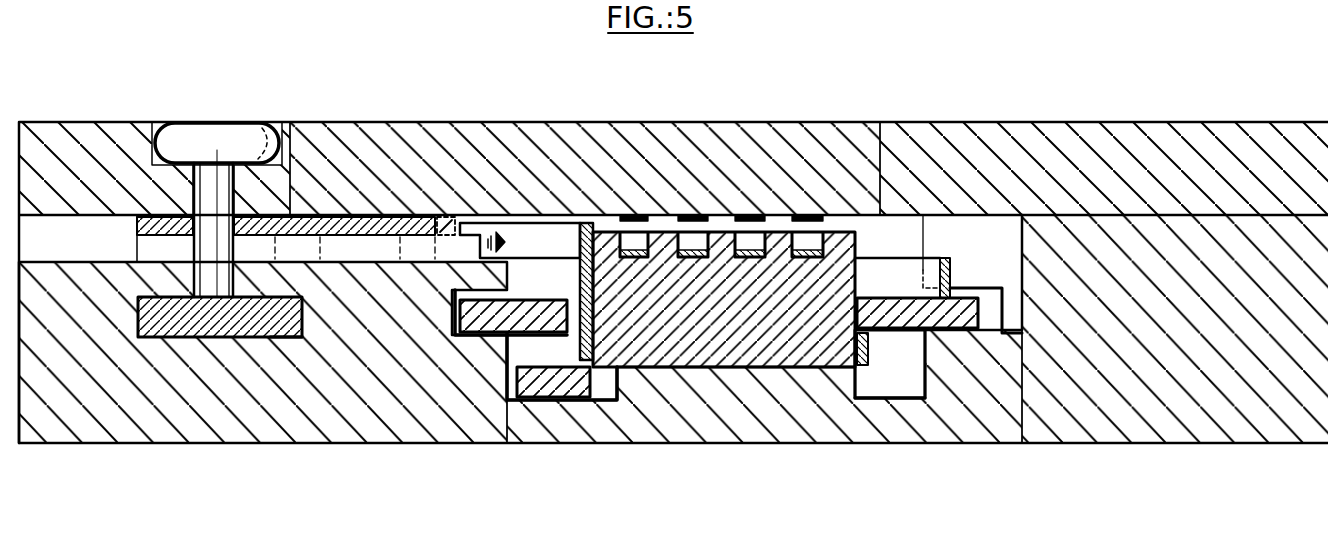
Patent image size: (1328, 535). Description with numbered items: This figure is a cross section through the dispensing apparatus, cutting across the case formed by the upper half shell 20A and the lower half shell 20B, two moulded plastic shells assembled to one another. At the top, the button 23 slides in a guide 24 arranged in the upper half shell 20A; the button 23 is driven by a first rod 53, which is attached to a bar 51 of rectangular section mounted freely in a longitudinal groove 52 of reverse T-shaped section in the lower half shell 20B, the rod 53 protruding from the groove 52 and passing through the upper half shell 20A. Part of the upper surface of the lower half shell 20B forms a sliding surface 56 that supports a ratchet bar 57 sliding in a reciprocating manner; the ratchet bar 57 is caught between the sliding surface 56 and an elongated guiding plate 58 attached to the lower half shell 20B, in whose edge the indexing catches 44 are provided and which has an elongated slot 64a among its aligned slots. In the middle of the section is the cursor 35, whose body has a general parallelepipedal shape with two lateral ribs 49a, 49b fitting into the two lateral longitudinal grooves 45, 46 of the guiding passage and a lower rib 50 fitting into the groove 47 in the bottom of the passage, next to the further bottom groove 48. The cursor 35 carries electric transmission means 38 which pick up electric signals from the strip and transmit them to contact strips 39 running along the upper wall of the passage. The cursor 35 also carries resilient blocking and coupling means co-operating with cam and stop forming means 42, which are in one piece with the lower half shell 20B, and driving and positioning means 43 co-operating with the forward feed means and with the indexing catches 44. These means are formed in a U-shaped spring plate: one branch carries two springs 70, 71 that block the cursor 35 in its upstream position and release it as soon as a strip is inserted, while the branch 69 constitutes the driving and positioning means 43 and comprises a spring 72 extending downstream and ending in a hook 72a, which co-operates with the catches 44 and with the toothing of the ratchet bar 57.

The upper half shell 20A is at (1228, 140).
The lower half shell 20B is at (1215, 385).
The button 23 is at (180, 143).
The guide 24 is at (272, 122).
The cursor 35 is at (743, 350).
The electric transmission means 38 is at (807, 232).
The contact strips 39 is at (693, 212).
The cam and stop forming means 42 is at (913, 275).
The driving and positioning means 43 is at (548, 247).
The indexing catches 44 is at (443, 225).
The lateral longitudinal groove 45 is at (458, 332).
The lateral longitudinal groove 46 is at (993, 315).
The longitudinal groove 47 is at (620, 398).
The longitudinal groove 48 is at (872, 390).
The lateral rib 49a is at (598, 218).
The lateral rib 49b is at (897, 305).
The lower rib 50 is at (533, 387).
The bar 51 is at (205, 323).
The longitudinal groove 52 is at (283, 338).
The first rod 53 is at (220, 152).
The sliding surface 56 is at (90, 262).
The ratchet bar 57 is at (148, 240).
The guiding plate 58 is at (380, 228).
The elongated slot 64a is at (240, 210).
The branch 69 is at (585, 372).
The spring 70 is at (950, 272).
The spring 71 is at (900, 400).
The spring 72 is at (558, 225).
The hook 72a is at (524, 235).